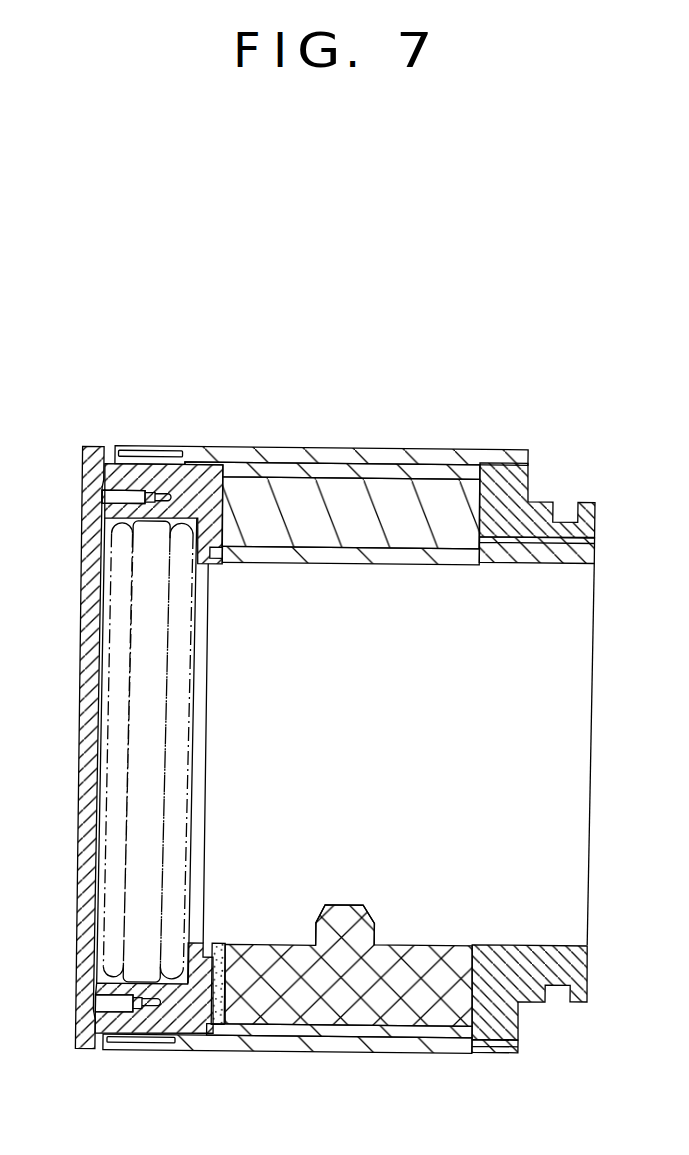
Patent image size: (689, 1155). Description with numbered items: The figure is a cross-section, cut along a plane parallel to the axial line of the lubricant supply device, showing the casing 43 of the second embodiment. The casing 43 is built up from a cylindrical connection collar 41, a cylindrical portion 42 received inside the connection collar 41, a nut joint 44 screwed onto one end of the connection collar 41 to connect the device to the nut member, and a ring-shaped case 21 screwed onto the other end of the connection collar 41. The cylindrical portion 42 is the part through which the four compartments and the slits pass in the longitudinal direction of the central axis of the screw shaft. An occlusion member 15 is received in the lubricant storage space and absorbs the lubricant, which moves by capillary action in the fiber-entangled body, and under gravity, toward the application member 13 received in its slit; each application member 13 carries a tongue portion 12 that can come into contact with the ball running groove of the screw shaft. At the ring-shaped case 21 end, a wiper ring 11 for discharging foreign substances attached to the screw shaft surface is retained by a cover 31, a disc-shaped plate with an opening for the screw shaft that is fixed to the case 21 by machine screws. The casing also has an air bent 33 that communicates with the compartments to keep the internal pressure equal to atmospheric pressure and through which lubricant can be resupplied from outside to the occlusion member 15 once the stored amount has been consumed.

The wiper ring 11 is at (140, 699).
The tongue portion 12 is at (341, 928).
The application member 13 is at (416, 996).
The occlusion member 15 is at (393, 498).
The ring-shaped case 21 is at (195, 474).
The cover 31 is at (90, 530).
The air bent 33 is at (530, 538).
The connection collar 41 is at (276, 456).
The cylindrical portion 42 is at (330, 470).
The casing 43 is at (231, 318).
The nut joint 44 is at (500, 485).